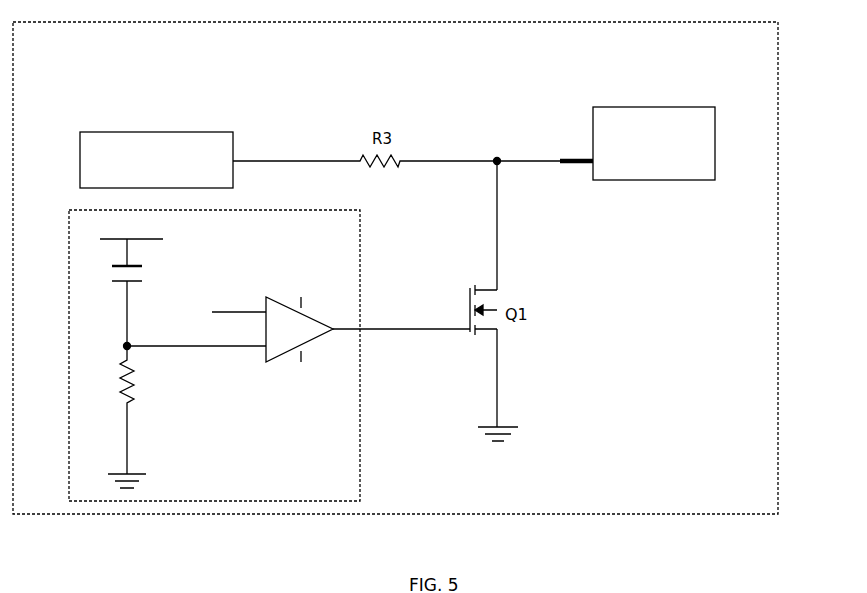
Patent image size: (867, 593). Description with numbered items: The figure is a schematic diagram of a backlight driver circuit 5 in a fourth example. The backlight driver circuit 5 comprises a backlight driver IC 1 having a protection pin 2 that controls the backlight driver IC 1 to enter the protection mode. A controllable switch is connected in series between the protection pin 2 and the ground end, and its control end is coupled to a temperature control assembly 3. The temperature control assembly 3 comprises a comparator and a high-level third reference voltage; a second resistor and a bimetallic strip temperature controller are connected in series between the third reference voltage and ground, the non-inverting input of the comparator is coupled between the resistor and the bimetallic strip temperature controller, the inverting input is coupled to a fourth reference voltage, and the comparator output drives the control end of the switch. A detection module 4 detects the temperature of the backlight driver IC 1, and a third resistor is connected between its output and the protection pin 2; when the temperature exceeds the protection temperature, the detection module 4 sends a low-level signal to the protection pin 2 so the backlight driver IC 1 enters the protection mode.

The backlight driver IC 1 is at (690, 107).
The protection pin 2 is at (572, 150).
The temperature control assembly 3 is at (363, 262).
The detection module 4 is at (173, 132).
The backlight driver circuit 5 is at (787, 212).